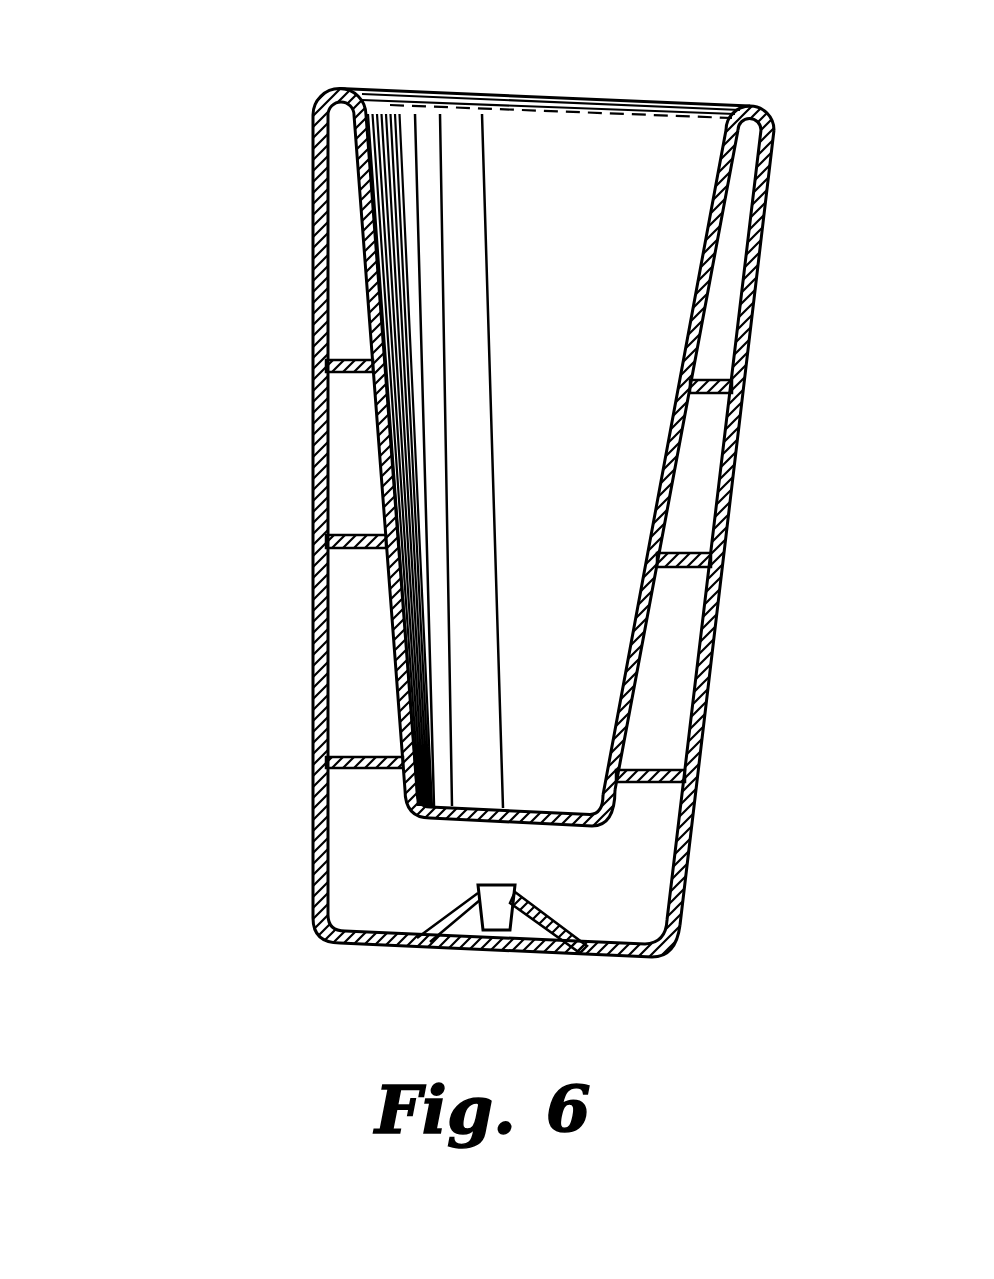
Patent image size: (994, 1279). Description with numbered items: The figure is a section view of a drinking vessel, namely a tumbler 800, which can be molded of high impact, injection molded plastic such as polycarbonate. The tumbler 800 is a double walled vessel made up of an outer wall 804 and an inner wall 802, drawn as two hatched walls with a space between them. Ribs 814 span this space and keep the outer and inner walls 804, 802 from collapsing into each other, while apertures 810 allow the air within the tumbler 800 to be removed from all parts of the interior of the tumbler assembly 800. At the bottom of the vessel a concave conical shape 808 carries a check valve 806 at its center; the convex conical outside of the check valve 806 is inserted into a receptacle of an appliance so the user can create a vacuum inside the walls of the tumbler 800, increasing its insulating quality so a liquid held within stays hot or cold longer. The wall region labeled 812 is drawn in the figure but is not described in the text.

The tumbler 800 is at (120, 978).
The inner wall 802 is at (685, 357).
The outer wall 804 is at (727, 560).
The check valve 806 is at (497, 897).
The concave conical shape 808 is at (520, 917).
The apertures 810 is at (350, 536).
The tray side wall 812 is at (343, 303).
The ribs 814 is at (318, 573).